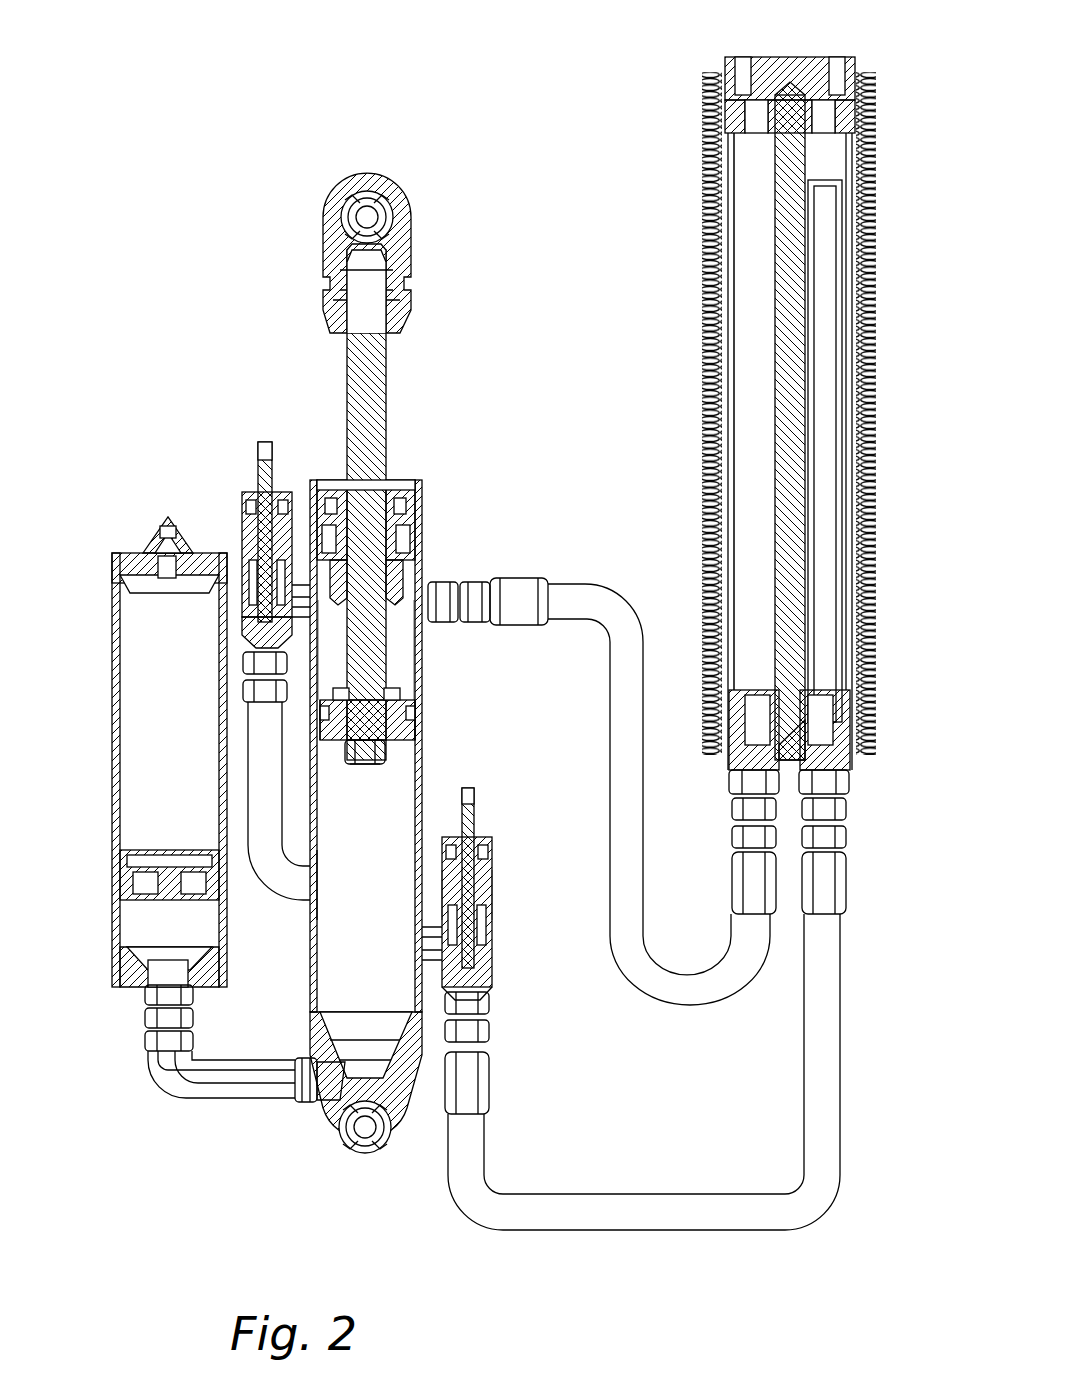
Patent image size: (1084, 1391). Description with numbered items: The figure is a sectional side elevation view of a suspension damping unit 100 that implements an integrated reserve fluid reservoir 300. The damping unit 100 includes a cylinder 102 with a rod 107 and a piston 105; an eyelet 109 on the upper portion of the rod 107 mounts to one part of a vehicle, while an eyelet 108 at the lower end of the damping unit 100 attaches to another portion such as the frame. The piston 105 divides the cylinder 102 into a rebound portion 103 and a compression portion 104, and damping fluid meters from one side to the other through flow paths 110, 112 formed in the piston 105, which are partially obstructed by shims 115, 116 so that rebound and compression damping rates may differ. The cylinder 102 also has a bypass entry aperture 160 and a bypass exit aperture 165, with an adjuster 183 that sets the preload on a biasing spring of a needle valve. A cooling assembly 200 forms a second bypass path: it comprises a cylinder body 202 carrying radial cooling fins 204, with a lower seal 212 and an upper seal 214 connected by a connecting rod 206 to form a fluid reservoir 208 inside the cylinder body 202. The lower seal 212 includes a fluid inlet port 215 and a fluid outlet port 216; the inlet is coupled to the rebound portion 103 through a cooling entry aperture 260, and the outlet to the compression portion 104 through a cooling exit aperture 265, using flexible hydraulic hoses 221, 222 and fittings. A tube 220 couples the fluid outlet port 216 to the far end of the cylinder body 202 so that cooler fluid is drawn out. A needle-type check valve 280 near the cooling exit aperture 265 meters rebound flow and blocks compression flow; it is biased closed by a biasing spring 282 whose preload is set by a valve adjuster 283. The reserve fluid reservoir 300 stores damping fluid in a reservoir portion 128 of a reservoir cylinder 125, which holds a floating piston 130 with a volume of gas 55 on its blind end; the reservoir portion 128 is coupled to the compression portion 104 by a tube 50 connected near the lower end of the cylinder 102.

The suspension damping unit 100 is at (242, 1211).
The cylinder 102 is at (312, 984).
The rebound portion 103 is at (397, 660).
The compression portion 104 is at (330, 930).
The piston 105 is at (392, 720).
The rod 107 is at (392, 398).
The eyelet 108 is at (345, 1130).
The eyelet 109 is at (398, 212).
The flow path 110 is at (395, 745).
The flow path 112 is at (374, 766).
The shims 115 is at (335, 732).
The shims 116 is at (392, 690).
The reservoir cylinder 125 is at (114, 746).
The reservoir portion 128 is at (145, 922).
The floating piston 130 is at (128, 886).
The bypass entry aperture 160 is at (320, 884).
The bypass exit aperture 165 is at (325, 600).
The adjuster 183 is at (258, 450).
The cooling assembly 200 is at (635, 108).
The cylinder body 202 is at (705, 396).
The cooling fins 204 is at (700, 310).
The connecting rod 206 is at (775, 422).
The fluid reservoir 208 is at (755, 485).
The lower seal 212 is at (815, 800).
The upper seal 214 is at (778, 55).
The fluid inlet port 215 is at (745, 762).
The fluid outlet port 216 is at (835, 762).
The tube 220 is at (850, 358).
The hydraulic hose 221 is at (608, 870).
The hydraulic hose 222 is at (705, 1234).
The cooling entry aperture 260 is at (450, 592).
The cooling exit aperture 265 is at (433, 943).
The check valve 280 is at (490, 950).
The biasing spring 282 is at (490, 923).
The valve adjuster 283 is at (476, 806).
The reserve fluid reservoir 300 is at (104, 507).
The tube 50 is at (165, 1105).
The volume of gas 55 is at (160, 684).